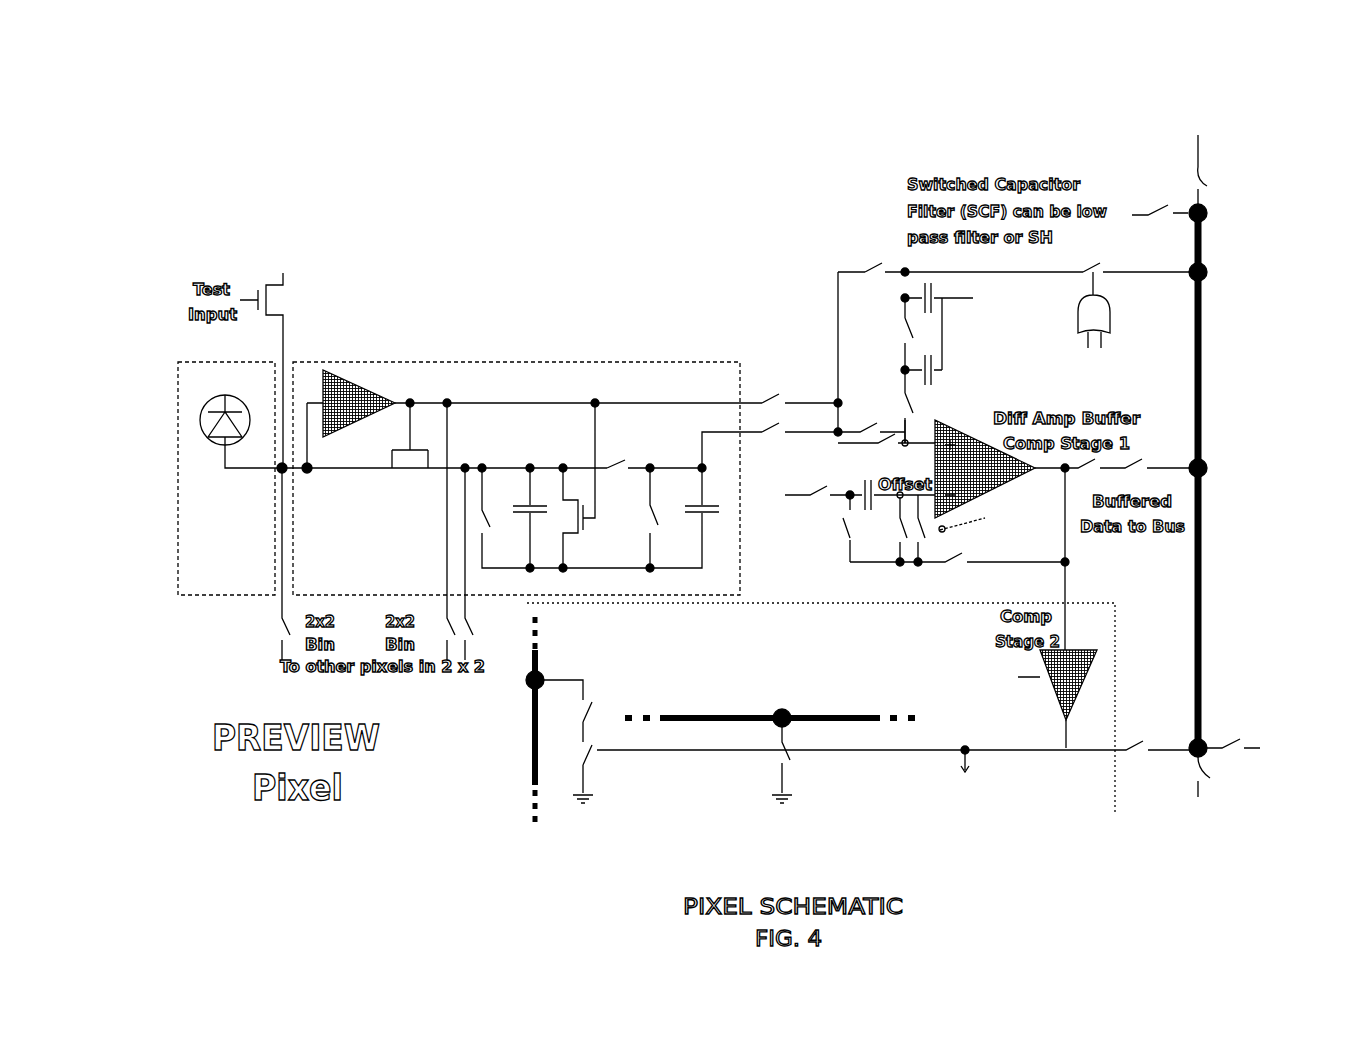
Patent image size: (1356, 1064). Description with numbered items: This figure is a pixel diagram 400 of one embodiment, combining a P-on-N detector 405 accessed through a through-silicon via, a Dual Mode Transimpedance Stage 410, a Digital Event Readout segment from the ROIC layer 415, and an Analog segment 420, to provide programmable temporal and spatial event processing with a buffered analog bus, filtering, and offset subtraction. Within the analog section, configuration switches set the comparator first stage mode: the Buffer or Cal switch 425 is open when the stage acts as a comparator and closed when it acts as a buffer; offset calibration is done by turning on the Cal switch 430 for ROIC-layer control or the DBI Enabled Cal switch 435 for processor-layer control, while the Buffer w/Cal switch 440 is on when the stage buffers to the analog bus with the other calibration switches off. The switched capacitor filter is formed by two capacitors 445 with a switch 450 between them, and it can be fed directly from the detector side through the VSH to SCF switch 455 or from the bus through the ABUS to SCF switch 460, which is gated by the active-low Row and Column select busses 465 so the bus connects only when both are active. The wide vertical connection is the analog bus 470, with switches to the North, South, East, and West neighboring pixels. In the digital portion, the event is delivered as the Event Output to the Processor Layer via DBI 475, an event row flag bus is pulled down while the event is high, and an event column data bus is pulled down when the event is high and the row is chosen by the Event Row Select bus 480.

The pixel diagram 400 is at (1355, 92).
The P-on-N detector 405 is at (230, 466).
The Dual Mode Transimpedance Stage 410 is at (522, 466).
The Digital Event Readout segment from ROIC Layer 415 is at (825, 722).
The Analog segment 420 is at (821, 675).
The Buffer or Cal switch 425 is at (957, 573).
The Cal switch 430 is at (890, 528).
The DBI Enabled Cal switch 435 is at (1000, 476).
The Buffer w/Cal switch 440 is at (827, 539).
The capacitors 445 is at (952, 334).
The switch 450 is at (881, 334).
The VSH to SCF switch 455 is at (871, 285).
The ABUS to SCF switch 460 is at (1051, 285).
The Row and Column ABUS to SCF select busses 465 is at (1100, 326).
The analog bus 470 is at (1209, 479).
The Event Output to the Processor Layer via DBI 475 is at (897, 789).
The Event Row Select bus 480 is at (585, 730).